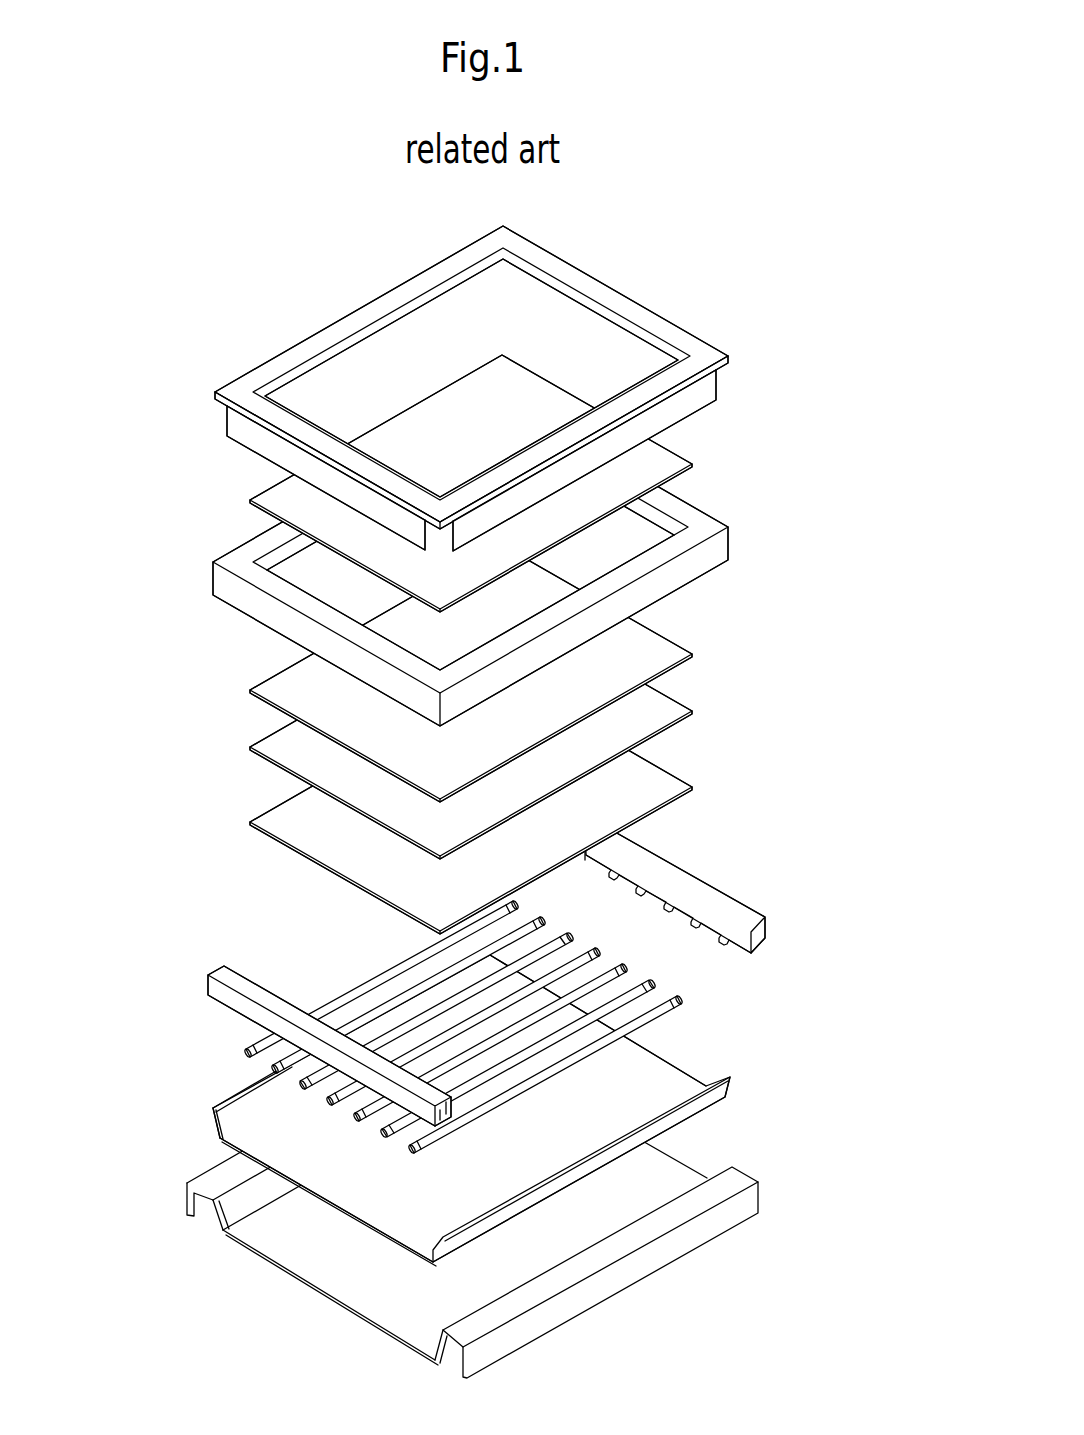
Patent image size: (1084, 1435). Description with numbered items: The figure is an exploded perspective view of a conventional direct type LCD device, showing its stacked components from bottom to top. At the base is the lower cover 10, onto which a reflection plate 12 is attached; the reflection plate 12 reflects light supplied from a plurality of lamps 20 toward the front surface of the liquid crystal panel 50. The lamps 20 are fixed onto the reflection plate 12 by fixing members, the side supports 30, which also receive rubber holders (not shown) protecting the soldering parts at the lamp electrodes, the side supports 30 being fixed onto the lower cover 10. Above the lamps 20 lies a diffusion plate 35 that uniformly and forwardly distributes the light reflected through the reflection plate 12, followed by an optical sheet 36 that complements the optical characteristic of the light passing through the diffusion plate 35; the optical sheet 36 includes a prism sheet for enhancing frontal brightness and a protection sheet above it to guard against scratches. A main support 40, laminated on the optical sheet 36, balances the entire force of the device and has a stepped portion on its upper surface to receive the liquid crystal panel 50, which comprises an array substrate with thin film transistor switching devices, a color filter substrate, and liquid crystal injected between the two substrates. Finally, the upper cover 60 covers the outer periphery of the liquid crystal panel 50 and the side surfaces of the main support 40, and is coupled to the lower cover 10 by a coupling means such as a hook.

The lower cover 10 is at (738, 1177).
The reflection plate 12 is at (670, 1075).
The lamps 20 is at (684, 1001).
The side supports 30 is at (733, 902).
The diffusion plate 35 is at (667, 785).
The optical sheet 36 is at (703, 650).
The main support 40 is at (718, 548).
The liquid crystal panel 50 is at (672, 456).
The upper cover 60 is at (660, 320).